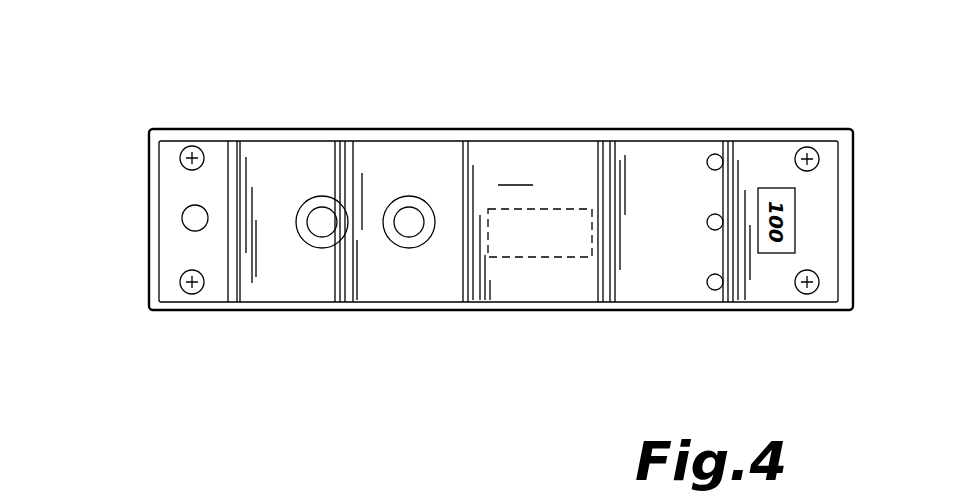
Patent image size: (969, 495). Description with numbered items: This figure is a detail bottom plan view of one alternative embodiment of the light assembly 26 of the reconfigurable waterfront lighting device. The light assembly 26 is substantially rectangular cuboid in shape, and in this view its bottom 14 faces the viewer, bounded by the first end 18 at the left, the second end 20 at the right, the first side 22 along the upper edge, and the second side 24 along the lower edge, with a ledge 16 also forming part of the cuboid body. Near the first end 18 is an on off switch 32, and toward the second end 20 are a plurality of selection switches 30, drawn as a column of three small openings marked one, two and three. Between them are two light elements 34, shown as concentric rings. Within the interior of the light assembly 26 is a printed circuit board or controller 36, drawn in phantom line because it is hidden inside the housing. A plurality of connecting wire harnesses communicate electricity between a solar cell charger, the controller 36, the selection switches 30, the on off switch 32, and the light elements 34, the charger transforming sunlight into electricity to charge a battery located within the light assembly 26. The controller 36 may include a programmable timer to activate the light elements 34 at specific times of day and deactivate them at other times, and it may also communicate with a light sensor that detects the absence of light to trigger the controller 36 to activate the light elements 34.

The bottom 14 is at (515, 171).
The ledge 16 is at (578, 128).
The first end 18 is at (147, 156).
The second end 20 is at (855, 232).
The first side 22 is at (330, 129).
The second side 24 is at (410, 311).
The light assembly 26 is at (141, 222).
The selection switches 30 is at (725, 226).
The on off switch 32 is at (185, 228).
The light elements 34 is at (322, 218).
The printed circuit board or controller 36 is at (541, 257).